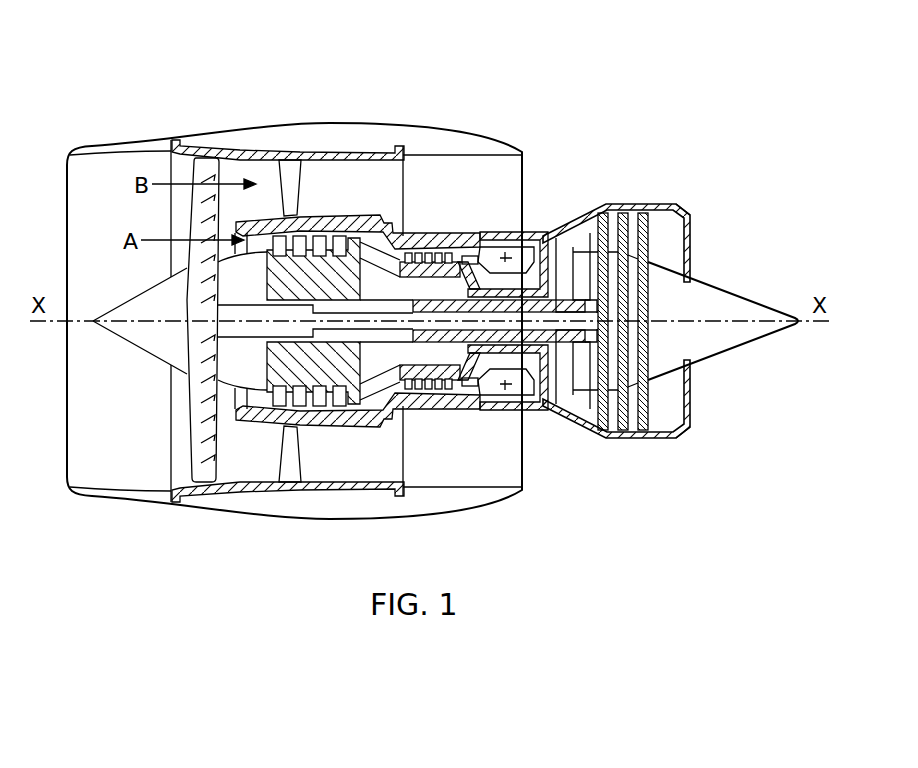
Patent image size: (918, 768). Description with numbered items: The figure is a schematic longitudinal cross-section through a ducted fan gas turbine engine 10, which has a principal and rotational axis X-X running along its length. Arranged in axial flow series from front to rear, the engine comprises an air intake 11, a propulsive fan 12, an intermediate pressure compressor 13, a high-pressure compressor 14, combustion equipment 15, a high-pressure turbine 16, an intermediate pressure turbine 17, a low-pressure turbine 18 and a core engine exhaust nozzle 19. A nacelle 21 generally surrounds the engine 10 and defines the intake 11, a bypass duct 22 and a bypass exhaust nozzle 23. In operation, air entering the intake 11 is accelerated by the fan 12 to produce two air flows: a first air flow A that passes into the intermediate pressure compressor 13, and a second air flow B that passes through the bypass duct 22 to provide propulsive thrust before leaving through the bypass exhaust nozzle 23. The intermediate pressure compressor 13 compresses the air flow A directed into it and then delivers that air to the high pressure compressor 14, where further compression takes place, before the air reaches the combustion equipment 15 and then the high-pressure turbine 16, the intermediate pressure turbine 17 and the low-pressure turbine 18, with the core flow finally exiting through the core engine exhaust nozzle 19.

The ducted fan gas turbine engine 10 is at (112, 86).
The air intake 11 is at (112, 153).
The propulsive fan 12 is at (194, 443).
The intermediate pressure compressor 13 is at (326, 408).
The high-pressure compressor 14 is at (468, 252).
The combustion equipment 15 is at (490, 388).
The high-pressure turbine 16 is at (520, 403).
The intermediate pressure turbine 17 is at (576, 223).
The low-pressure turbine 18 is at (594, 430).
The core engine exhaust nozzle 19 is at (686, 207).
The nacelle 21 is at (331, 132).
The bypass duct 22 is at (480, 194).
The bypass exhaust nozzle 23 is at (522, 150).